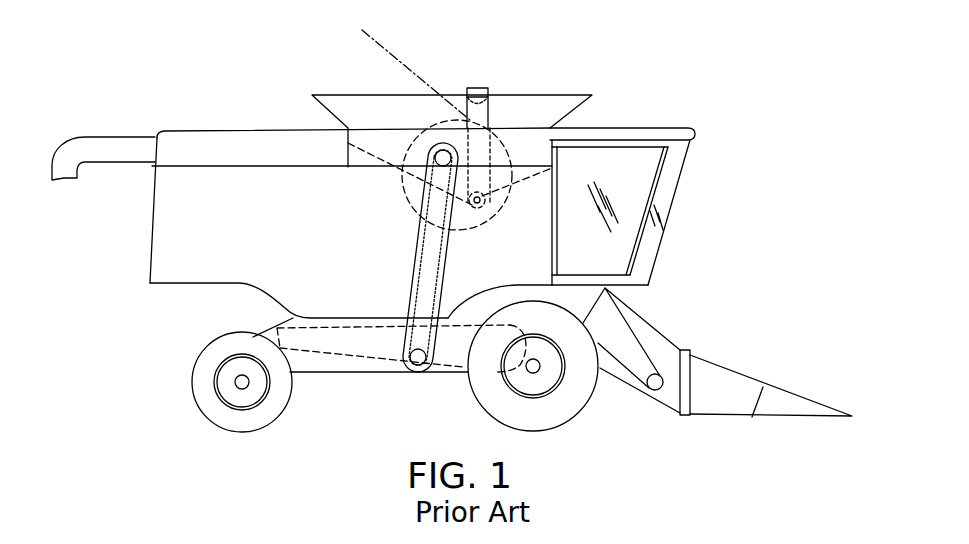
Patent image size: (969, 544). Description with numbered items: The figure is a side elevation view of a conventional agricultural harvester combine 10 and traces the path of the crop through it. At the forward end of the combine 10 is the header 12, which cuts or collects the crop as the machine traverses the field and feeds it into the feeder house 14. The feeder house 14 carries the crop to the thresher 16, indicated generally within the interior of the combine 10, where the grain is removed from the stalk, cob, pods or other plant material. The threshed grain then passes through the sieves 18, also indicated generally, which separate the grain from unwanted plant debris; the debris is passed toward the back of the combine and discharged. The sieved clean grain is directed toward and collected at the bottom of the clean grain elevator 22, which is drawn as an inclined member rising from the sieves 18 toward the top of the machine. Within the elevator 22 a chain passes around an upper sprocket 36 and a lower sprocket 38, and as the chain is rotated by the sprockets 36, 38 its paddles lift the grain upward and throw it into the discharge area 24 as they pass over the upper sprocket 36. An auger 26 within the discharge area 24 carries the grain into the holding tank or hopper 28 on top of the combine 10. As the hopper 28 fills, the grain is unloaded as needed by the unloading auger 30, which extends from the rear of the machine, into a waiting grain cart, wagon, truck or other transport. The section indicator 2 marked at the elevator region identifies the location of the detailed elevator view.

The section line 2- 2 is at (362, 30).
The agricultural harvester combine 10 is at (762, 133).
The header 12 is at (711, 375).
The feeder house 14 is at (653, 338).
The thresher 16 is at (483, 338).
The sieves 18 is at (378, 332).
The clean grain elevator 22 is at (432, 230).
The discharge area 24 is at (481, 157).
The auger 26 is at (473, 113).
The hopper 28 is at (533, 136).
The unloading auger 30 is at (126, 142).
The upper sprocket 36 is at (423, 153).
The lower sprocket 38 is at (414, 366).